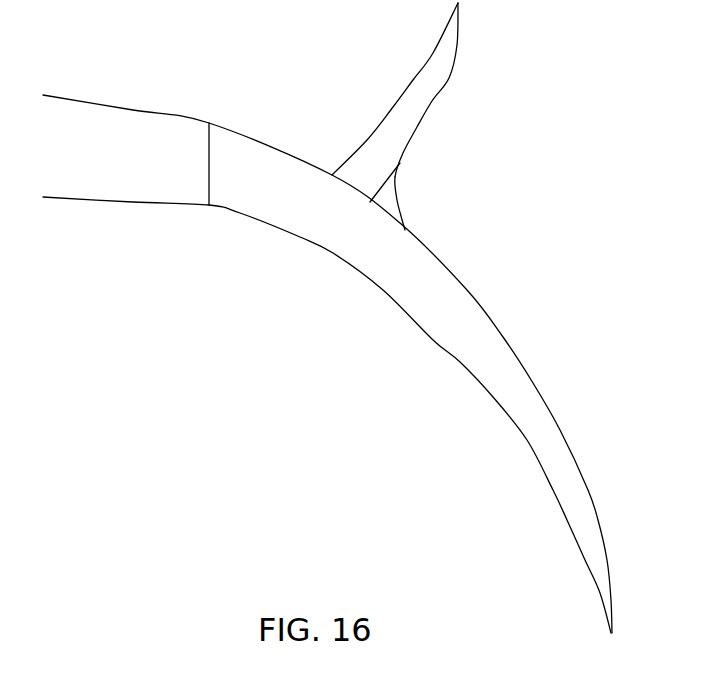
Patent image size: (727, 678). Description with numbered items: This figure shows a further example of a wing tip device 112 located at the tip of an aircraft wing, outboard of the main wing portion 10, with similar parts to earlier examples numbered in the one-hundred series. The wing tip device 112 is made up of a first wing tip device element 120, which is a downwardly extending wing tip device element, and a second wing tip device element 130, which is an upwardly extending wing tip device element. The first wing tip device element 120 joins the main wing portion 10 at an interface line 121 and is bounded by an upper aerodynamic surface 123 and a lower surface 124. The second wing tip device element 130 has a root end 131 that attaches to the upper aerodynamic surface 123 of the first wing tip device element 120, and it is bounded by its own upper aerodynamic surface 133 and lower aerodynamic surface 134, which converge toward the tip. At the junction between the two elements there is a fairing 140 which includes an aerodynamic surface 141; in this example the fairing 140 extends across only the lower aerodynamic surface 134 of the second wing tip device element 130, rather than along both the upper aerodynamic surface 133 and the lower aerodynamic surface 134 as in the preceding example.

The main wing portion 10 is at (70, 183).
The wing tip device 112 is at (528, 187).
The first wing tip device element 120 is at (301, 215).
The interface edge 121 is at (217, 177).
The upper aerodynamic surface 123 is at (483, 302).
The inner surface 124 is at (453, 358).
The second wing tip device element 130 is at (423, 103).
The root end 131 is at (340, 185).
The upper aerodynamic surface 133 is at (425, 53).
The lower aerodynamic surface 134 is at (457, 62).
The fairing 140 is at (390, 202).
The aerodynamic surface 141 is at (398, 212).